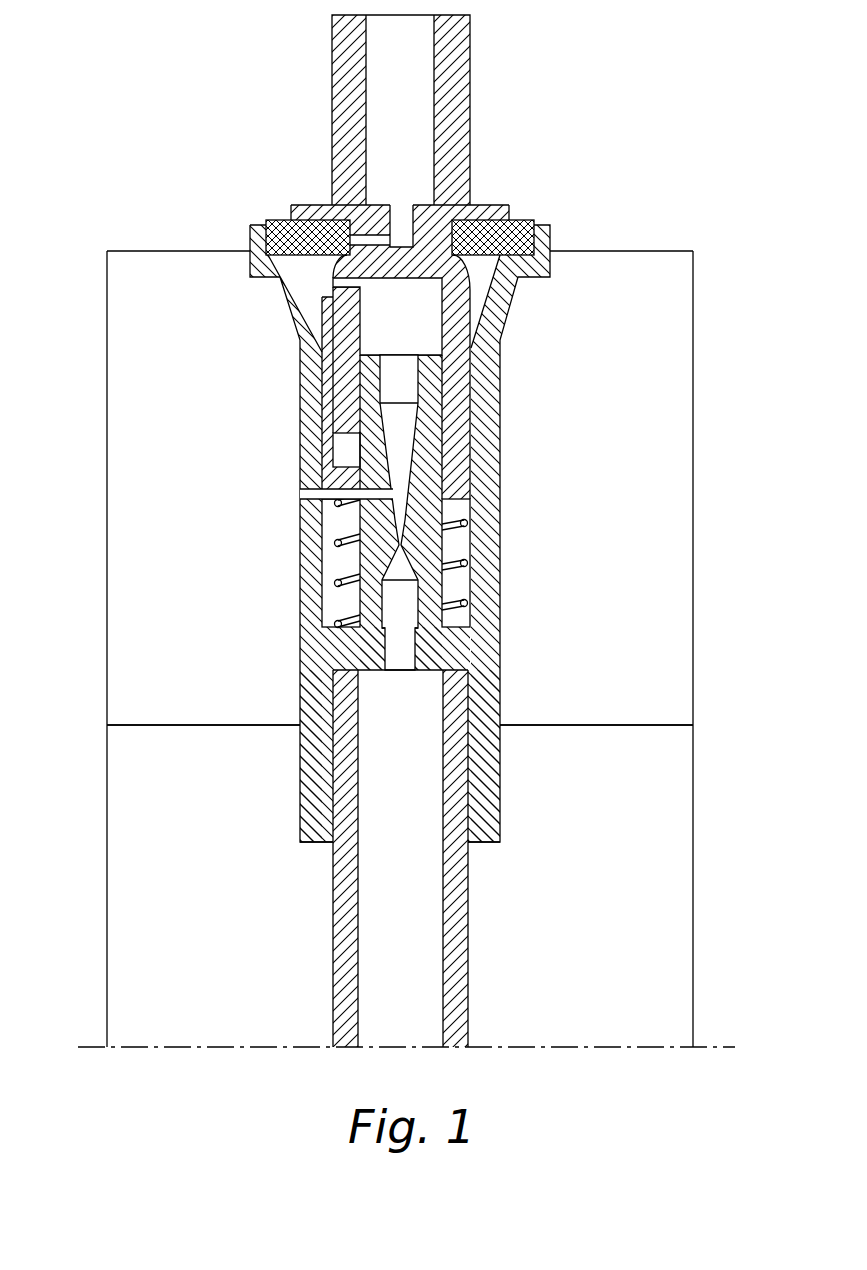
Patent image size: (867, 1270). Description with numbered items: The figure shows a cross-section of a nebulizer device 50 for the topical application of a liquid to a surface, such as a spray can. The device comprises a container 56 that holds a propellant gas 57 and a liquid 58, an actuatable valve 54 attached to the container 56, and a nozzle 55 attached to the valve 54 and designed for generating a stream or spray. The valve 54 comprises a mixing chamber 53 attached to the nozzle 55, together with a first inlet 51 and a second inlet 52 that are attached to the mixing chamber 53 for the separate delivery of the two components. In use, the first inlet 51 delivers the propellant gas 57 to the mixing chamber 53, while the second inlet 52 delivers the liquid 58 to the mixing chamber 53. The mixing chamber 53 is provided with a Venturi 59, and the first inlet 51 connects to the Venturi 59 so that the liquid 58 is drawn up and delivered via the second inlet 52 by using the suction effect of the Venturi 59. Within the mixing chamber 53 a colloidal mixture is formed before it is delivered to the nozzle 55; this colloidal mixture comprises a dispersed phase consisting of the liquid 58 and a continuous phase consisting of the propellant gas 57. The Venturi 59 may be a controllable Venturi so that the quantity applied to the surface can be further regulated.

The nebulizer device 50 is at (86, 236).
The first inlet 51 is at (405, 915).
The second inlet 52 is at (378, 491).
The mixing chamber 53 is at (415, 315).
The actuatable valve 54 is at (535, 193).
The nozzle 55 is at (395, 113).
The container 56 is at (107, 494).
The propellant gas 57 is at (223, 433).
The liquid 58 is at (223, 887).
The Venturi 59 is at (400, 530).